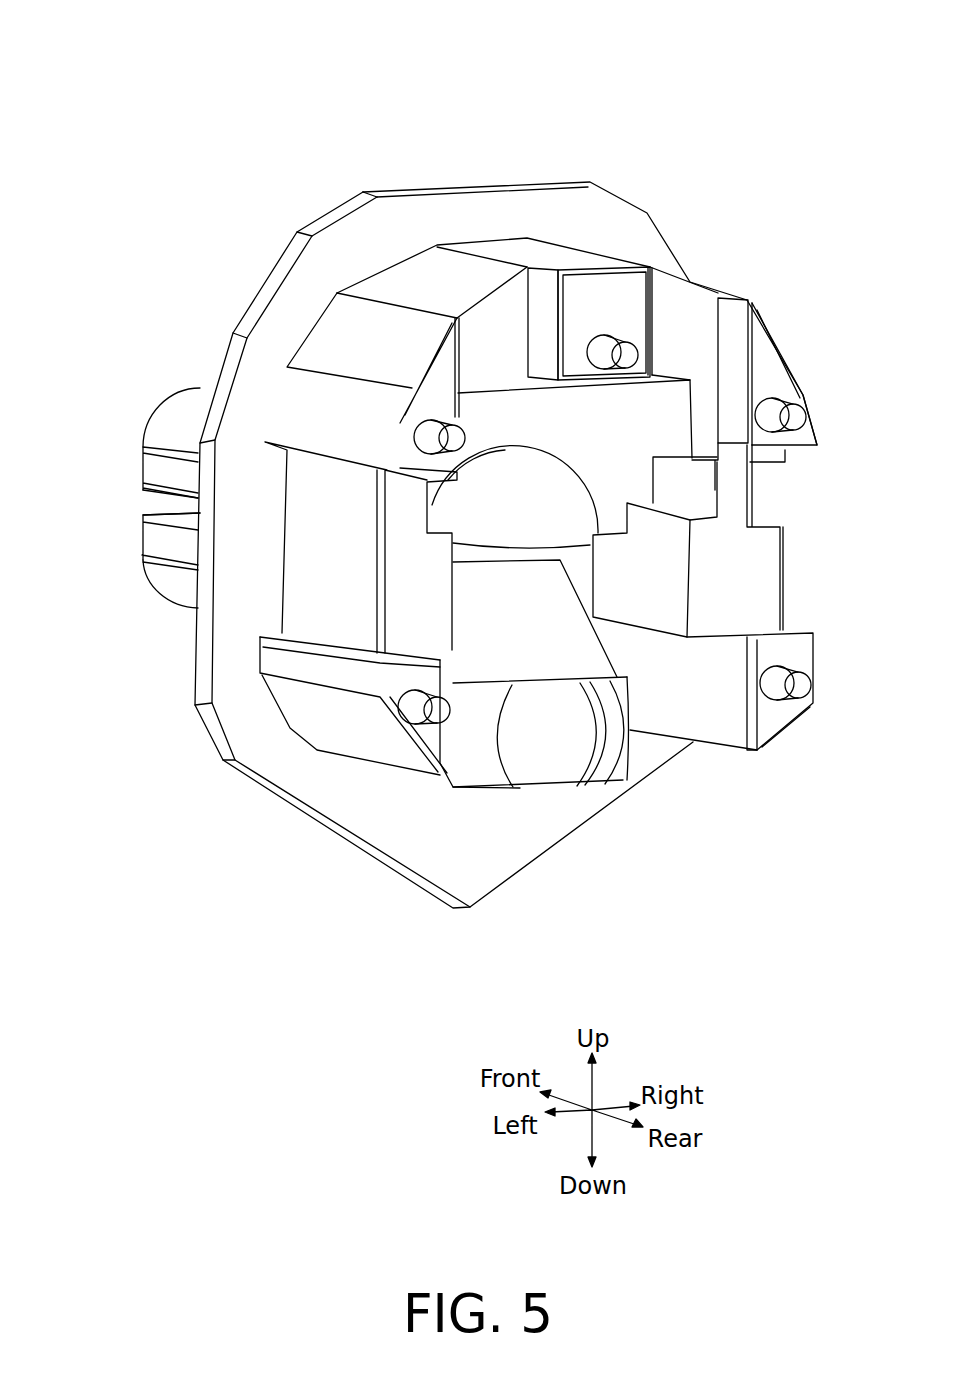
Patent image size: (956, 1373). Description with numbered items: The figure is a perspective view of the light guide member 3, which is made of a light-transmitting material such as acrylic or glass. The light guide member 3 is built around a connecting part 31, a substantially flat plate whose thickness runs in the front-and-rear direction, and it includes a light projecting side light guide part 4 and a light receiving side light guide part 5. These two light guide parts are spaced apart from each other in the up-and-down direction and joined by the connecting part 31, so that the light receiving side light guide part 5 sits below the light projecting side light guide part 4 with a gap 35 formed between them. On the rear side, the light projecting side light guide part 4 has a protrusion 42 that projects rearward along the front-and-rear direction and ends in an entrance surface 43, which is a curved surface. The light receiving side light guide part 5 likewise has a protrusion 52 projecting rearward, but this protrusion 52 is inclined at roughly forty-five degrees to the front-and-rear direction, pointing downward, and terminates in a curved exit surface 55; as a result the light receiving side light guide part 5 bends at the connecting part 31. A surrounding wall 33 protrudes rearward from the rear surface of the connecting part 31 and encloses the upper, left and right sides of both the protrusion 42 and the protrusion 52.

The light guide member 3 is at (383, 114).
The connecting part 31 is at (343, 203).
The surrounding wall 33 is at (528, 262).
The light projecting side light guide part 4 is at (180, 413).
The light receiving side light guide part 5 is at (182, 587).
The gap 35 is at (157, 503).
The protrusion 42 is at (487, 450).
The entrance surface 43 is at (540, 487).
The protrusion 52 is at (550, 612).
The exit surface 55 is at (542, 758).